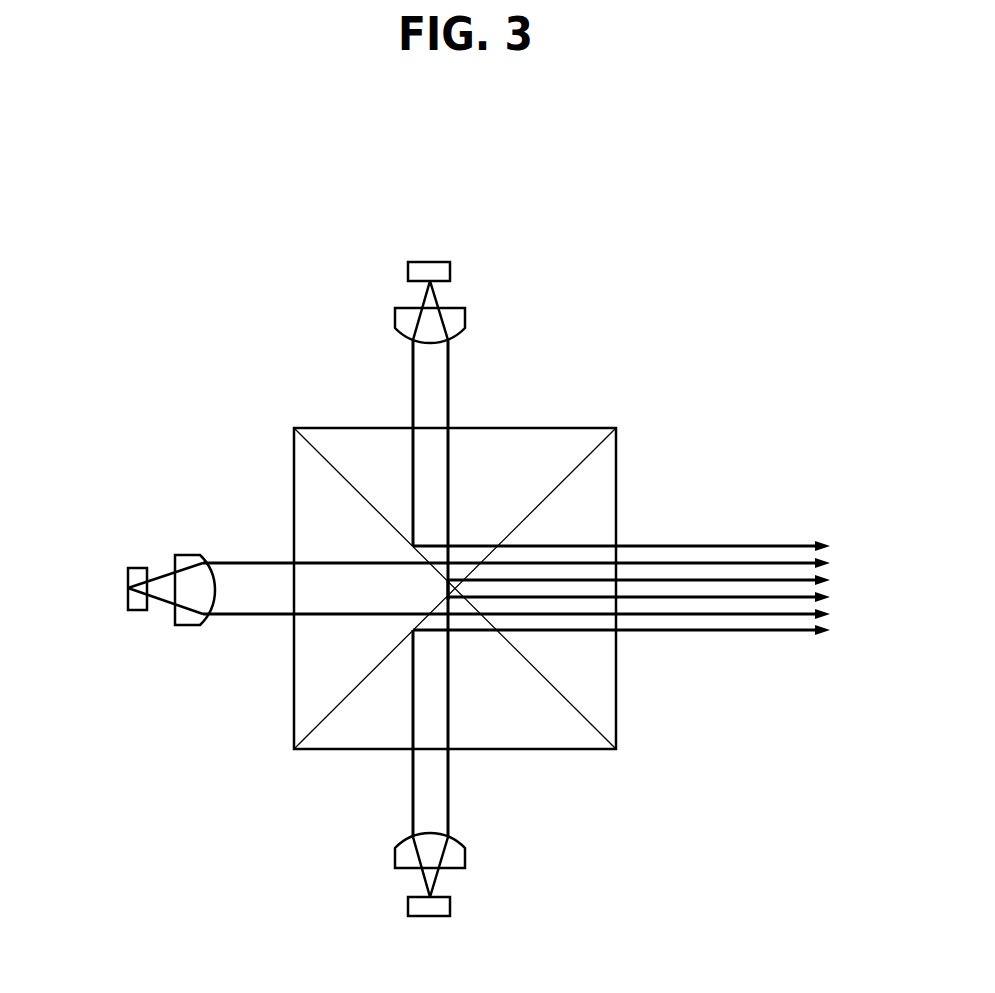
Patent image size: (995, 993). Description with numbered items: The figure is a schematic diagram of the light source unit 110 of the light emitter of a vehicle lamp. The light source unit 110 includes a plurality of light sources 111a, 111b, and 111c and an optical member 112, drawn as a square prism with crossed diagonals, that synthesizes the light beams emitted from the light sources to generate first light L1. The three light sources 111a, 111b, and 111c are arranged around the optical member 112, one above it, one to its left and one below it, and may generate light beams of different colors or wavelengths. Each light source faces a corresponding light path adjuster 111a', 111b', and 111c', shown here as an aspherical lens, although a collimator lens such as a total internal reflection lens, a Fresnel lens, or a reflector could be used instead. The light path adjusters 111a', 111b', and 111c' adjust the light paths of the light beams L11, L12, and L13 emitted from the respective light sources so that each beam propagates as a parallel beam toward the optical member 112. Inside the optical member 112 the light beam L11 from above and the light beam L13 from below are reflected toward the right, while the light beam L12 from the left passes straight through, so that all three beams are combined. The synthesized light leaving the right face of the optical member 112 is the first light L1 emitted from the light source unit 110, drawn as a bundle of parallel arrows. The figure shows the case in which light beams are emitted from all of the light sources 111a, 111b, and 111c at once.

The light source unit 110 is at (717, 188).
The optical member 112 is at (555, 428).
The light source 111a is at (432, 275).
The light path adjuster 111a' is at (471, 324).
The light source 111b is at (126, 588).
The light path adjuster 111b' is at (186, 563).
The light source 111c is at (430, 902).
The light path adjuster 111c' is at (471, 853).
The light beam L11 is at (447, 370).
The light beam L12 is at (270, 567).
The light beam L13 is at (447, 780).
The first light L1 is at (838, 547).